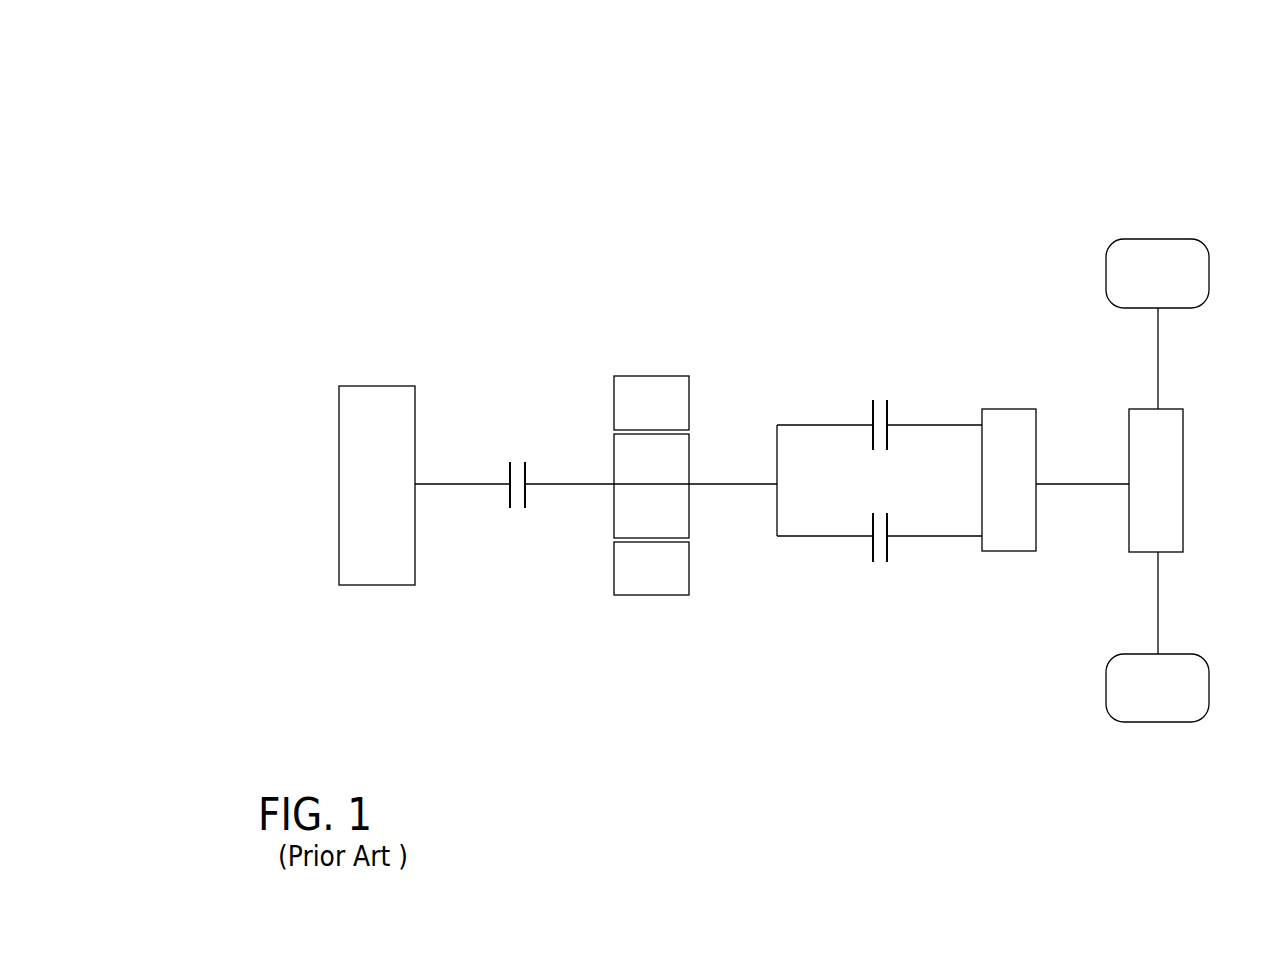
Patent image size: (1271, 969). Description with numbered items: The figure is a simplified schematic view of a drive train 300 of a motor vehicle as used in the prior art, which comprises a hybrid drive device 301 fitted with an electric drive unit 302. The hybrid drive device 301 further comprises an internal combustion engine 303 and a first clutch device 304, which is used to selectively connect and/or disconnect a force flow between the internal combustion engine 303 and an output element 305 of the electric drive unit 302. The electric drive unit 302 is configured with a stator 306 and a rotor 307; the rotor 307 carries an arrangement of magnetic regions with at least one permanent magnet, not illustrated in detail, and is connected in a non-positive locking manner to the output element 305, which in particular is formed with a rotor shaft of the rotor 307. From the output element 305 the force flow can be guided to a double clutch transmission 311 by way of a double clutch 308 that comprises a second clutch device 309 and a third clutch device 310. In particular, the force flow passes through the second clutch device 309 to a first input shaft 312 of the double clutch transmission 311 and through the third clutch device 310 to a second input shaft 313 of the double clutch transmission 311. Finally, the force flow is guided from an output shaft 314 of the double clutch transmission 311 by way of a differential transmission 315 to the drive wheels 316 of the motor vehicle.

The drive train 300 is at (587, 137).
The hybrid drive device 301 is at (570, 657).
The electric drive unit 302 is at (655, 593).
The internal combustion engine 303 is at (366, 402).
The first clutch device 304 is at (510, 475).
The output element 305 is at (553, 484).
The stator 306 is at (652, 377).
The rotor 307 is at (615, 518).
The double clutch 308 is at (890, 303).
The second clutch device 309 is at (873, 415).
The third clutch device 310 is at (873, 549).
The double clutch transmission 311 is at (1006, 420).
The first input shaft 312 is at (932, 425).
The second input shaft 313 is at (932, 536).
The output shaft 314 is at (1068, 484).
The differential transmission 315 is at (1170, 483).
The drive wheels 316 is at (1167, 262).